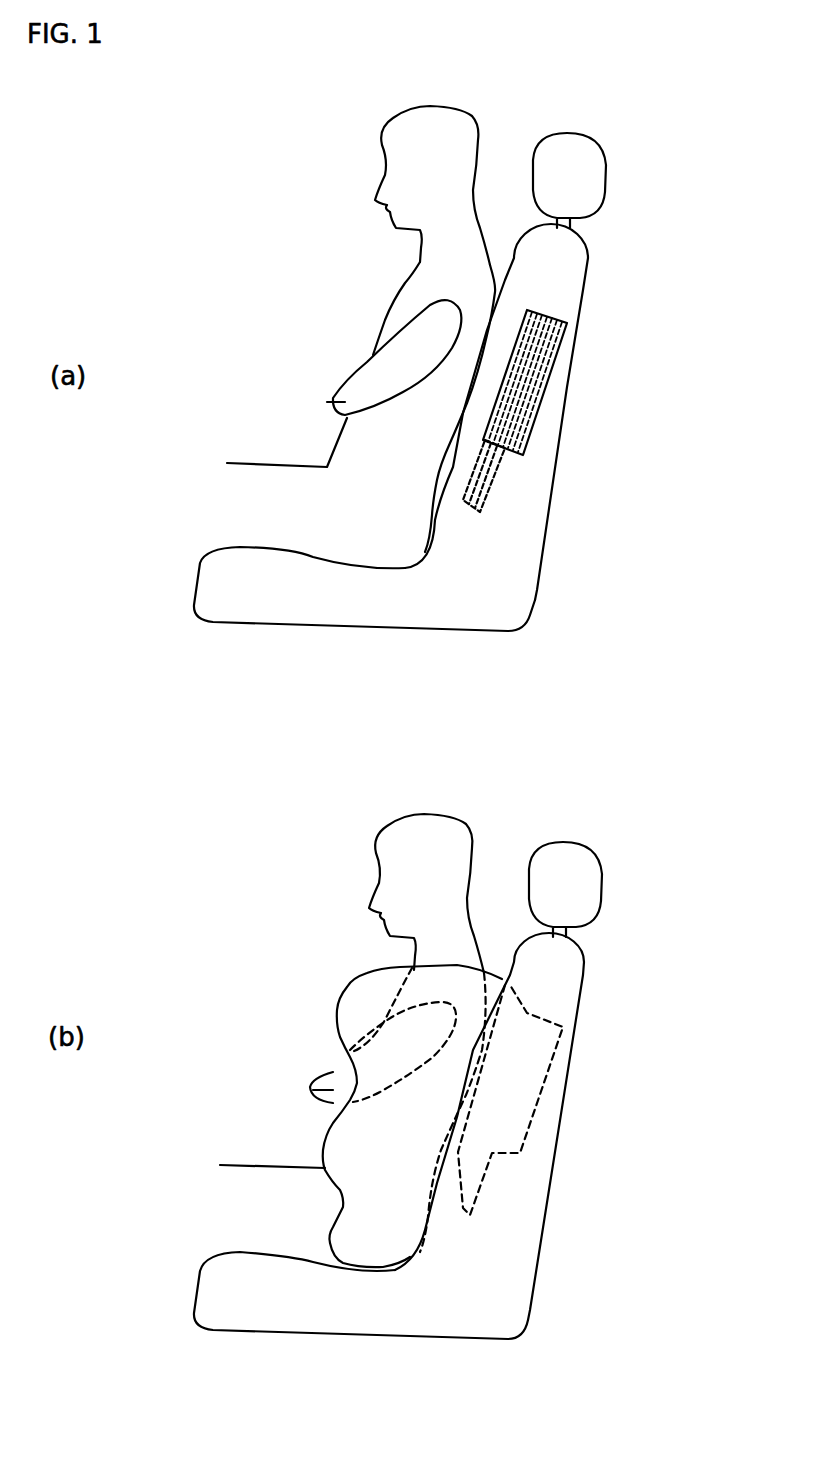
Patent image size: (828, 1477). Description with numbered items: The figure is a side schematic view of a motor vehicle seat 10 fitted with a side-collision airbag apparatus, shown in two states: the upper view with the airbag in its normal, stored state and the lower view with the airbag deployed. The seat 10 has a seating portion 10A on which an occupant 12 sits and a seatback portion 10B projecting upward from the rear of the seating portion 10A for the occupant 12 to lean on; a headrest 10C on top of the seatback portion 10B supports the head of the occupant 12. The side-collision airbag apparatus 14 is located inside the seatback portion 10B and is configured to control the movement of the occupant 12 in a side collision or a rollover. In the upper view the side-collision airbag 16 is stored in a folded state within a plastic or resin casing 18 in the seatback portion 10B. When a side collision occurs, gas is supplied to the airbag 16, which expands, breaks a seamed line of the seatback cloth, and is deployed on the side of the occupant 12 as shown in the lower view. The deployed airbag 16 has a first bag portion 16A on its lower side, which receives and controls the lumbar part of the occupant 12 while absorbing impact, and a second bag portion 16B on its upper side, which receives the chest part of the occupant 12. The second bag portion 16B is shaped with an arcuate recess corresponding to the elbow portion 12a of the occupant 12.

The seat 10 is at (456, 768).
The seating portion 10A is at (323, 610).
The seatback portion 10B is at (587, 245).
The headrest 10C is at (607, 180).
The occupant 12 is at (353, 670).
The elbow portion 12a is at (343, 403).
The side-collision airbag apparatus 14 is at (545, 400).
The side-collision airbag 16 is at (400, 862).
The first bag portion 16A is at (350, 1223).
The second bag portion 16B is at (353, 1018).
The casing 18 is at (467, 507).